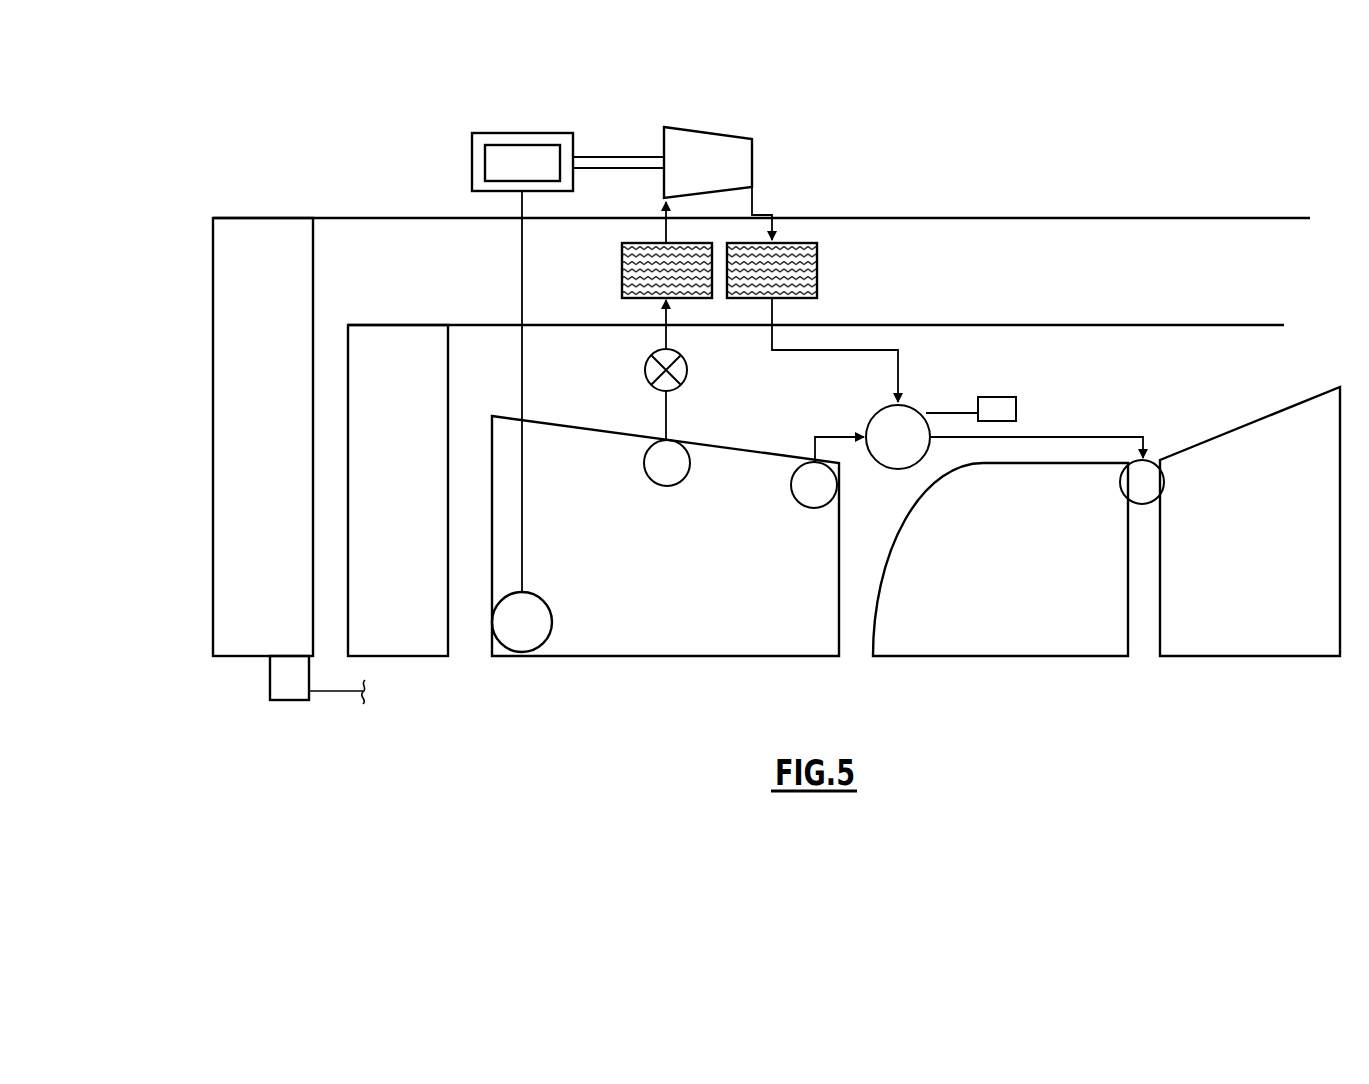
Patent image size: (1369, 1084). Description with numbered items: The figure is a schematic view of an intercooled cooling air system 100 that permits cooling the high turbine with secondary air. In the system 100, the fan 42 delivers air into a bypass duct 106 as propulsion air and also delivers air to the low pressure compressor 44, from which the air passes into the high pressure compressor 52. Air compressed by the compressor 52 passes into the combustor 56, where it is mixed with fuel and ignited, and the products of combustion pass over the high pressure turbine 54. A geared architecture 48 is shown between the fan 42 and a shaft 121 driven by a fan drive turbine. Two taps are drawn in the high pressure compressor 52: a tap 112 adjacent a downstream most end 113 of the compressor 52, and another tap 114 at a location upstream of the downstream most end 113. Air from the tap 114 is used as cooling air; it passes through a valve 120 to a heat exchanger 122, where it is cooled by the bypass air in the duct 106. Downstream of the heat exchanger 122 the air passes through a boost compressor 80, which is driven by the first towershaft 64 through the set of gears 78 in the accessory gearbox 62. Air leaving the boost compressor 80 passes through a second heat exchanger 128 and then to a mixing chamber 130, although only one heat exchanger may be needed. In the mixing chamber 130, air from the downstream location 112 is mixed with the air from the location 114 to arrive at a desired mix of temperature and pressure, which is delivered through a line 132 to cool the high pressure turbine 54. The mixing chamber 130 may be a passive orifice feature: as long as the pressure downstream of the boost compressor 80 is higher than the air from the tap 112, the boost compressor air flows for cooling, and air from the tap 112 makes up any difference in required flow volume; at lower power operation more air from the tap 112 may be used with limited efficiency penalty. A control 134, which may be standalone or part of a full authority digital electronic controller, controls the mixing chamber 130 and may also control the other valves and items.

The intercooled cooling air system 100 is at (168, 178).
The fan 42 is at (254, 242).
The low pressure compressor 44 is at (448, 384).
The geared architecture 48 is at (286, 702).
The high pressure compressor 52 is at (552, 441).
The high pressure turbine 54 is at (1221, 474).
The combustor 56 is at (1045, 493).
The accessory gearbox 62 is at (497, 133).
The first towershaft 64 is at (522, 262).
The set of gears 78 is at (525, 145).
The boost compressor 80 is at (709, 140).
The bypass duct 106 is at (425, 299).
The tap 112 is at (808, 462).
The downstream most end 113 is at (839, 538).
The tap 114 is at (672, 440).
The valve 120 is at (648, 360).
The shaft 121 is at (332, 693).
The heat exchanger 122 is at (622, 266).
The heat exchanger 128 is at (816, 288).
The mixing chamber 130 is at (905, 406).
The line 132 is at (1146, 458).
The control 134 is at (1016, 410).